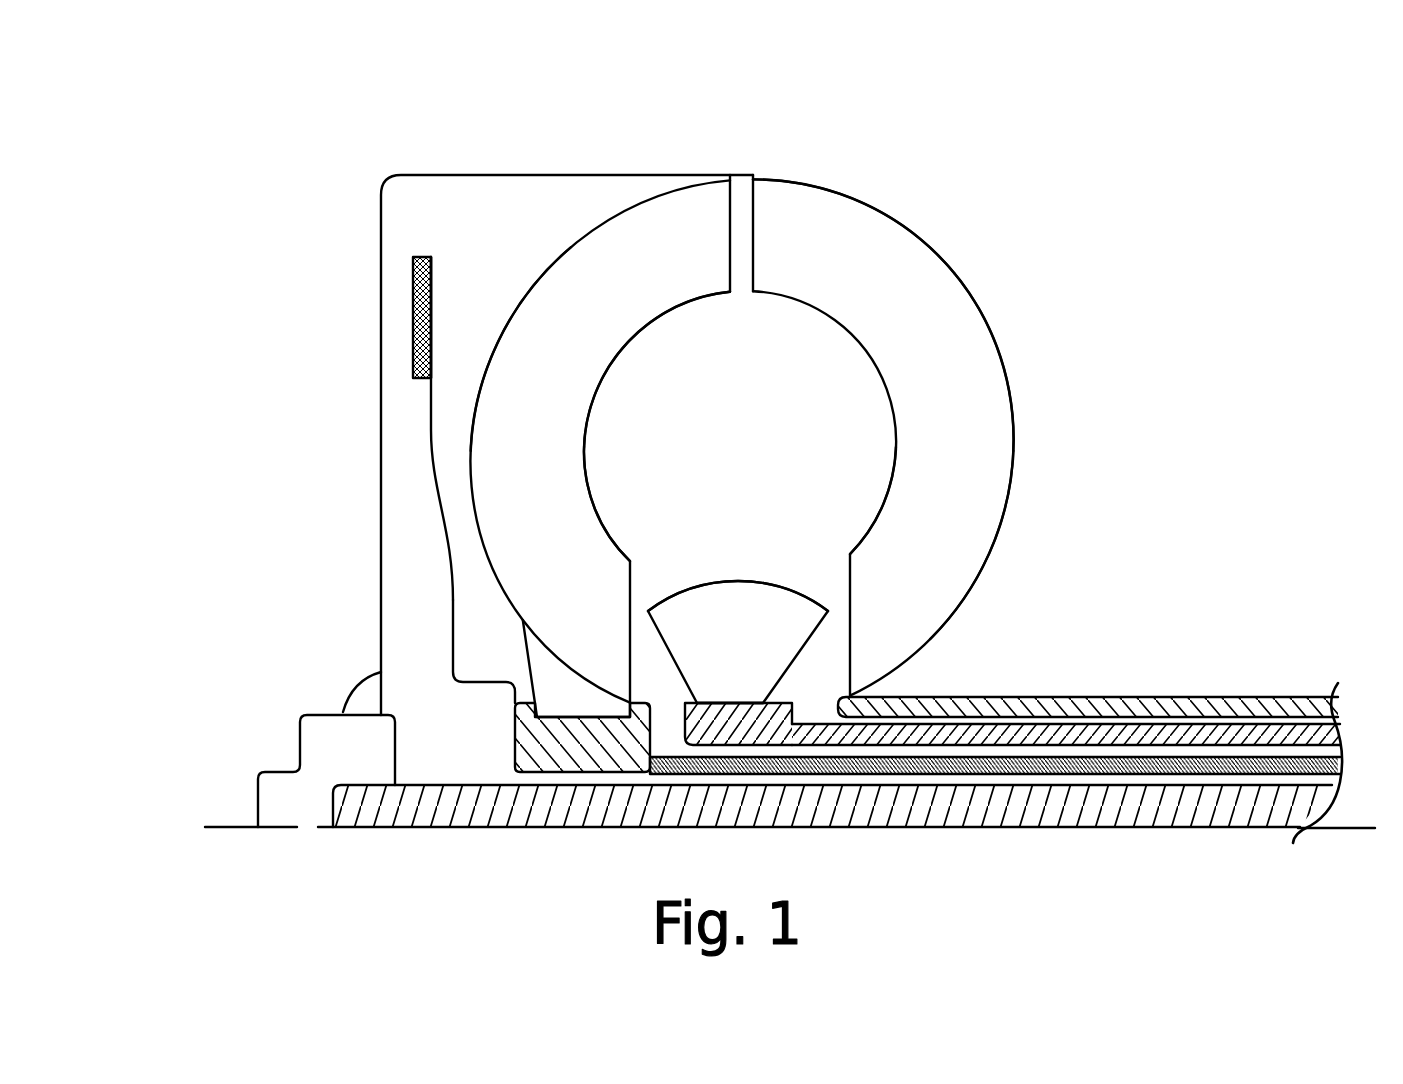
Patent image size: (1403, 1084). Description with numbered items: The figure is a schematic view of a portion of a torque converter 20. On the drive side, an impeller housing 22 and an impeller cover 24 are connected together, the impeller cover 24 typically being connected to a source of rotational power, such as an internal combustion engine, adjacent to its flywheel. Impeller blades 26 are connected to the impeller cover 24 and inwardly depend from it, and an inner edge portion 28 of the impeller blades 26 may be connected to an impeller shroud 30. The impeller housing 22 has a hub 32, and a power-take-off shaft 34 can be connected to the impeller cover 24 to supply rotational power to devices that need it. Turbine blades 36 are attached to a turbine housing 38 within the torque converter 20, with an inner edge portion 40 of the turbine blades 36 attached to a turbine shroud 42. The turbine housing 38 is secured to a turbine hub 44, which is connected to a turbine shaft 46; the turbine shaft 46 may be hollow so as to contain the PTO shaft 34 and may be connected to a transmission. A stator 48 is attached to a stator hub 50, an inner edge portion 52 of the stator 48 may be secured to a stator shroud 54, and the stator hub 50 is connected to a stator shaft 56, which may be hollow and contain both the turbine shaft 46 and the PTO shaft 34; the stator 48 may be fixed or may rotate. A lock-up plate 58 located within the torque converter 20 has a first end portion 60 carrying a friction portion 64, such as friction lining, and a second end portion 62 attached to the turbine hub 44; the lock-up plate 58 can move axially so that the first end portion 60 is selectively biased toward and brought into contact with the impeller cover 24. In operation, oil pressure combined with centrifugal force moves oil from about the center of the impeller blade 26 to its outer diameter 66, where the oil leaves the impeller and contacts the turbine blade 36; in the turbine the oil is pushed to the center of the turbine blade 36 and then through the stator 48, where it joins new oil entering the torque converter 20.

The torque converter 20 is at (908, 118).
The impeller housing 22 is at (965, 283).
The impeller cover 24 is at (522, 168).
The impeller blades 26 is at (875, 255).
The inner edge portion 28 is at (940, 404).
The impeller shroud 30 is at (890, 430).
The hub 32 is at (1140, 703).
The power-take-off shaft 34 is at (1027, 803).
The turbine blades 36 is at (660, 275).
The turbine housing 38 is at (543, 262).
The inner edge portion 40 is at (608, 322).
The turbine shroud 42 is at (596, 414).
The turbine hub 44 is at (528, 748).
The turbine shaft 46 is at (738, 765).
The stator 48 is at (719, 614).
The stator hub 50 is at (740, 724).
The inner edge portion 52 is at (799, 618).
The stator shroud 54 is at (773, 577).
The stator shaft 56 is at (943, 735).
The lock-up plate 58 is at (424, 405).
The first end portion 60 is at (407, 329).
The second end portion 62 is at (440, 635).
The friction portion 64 is at (437, 280).
The outer diameter 66 is at (978, 540).